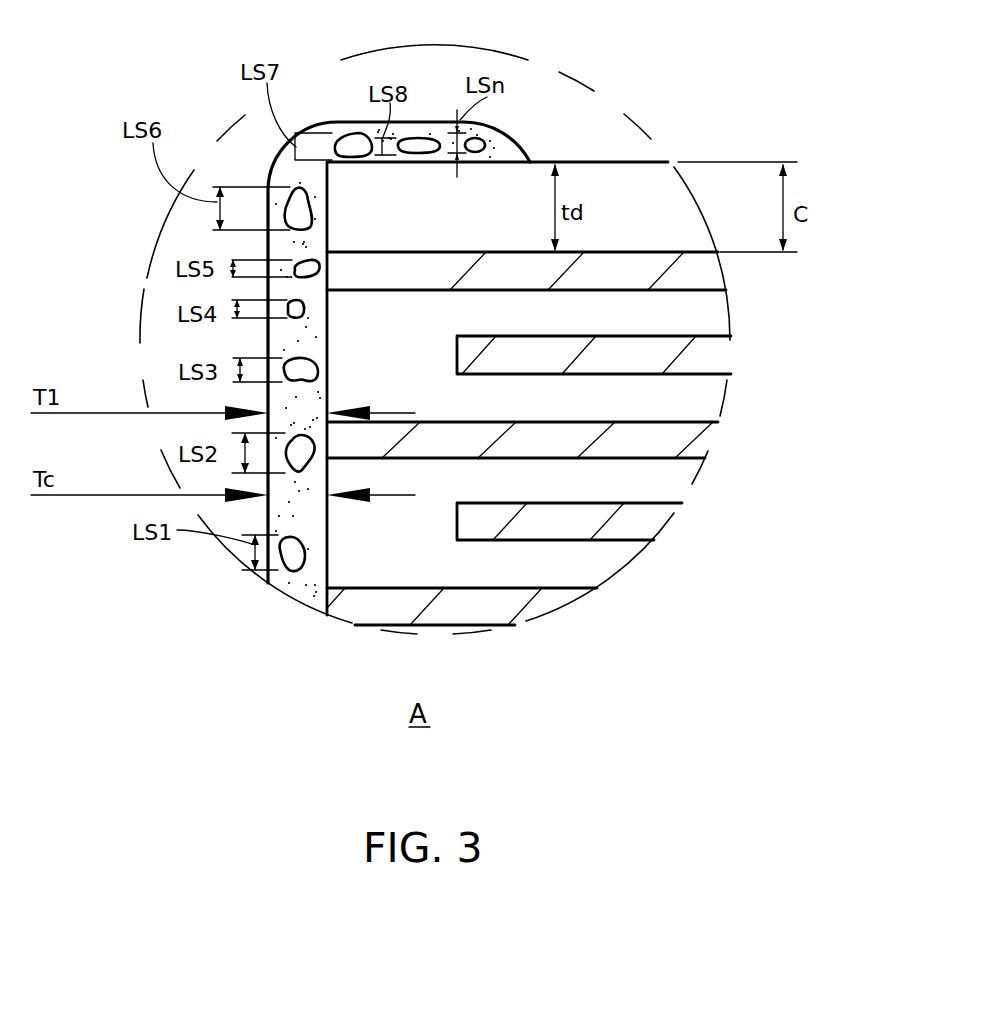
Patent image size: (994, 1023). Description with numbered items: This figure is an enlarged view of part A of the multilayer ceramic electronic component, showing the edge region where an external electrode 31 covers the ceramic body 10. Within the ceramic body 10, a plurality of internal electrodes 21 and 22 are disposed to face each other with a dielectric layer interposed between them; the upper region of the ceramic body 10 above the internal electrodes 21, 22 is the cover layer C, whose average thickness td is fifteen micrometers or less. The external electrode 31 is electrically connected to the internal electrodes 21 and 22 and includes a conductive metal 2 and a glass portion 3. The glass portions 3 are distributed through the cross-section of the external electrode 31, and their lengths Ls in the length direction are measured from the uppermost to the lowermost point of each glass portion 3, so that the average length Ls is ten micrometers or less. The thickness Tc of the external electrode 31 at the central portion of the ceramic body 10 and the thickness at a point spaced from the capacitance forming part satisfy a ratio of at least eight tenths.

The ceramic body 10 is at (598, 162).
The internal electrode 21 is at (705, 280).
The internal electrode 22 is at (720, 362).
The conductive metal 2 is at (302, 598).
The glass portion 3 is at (321, 403).
The external electrode 31 is at (290, 562).